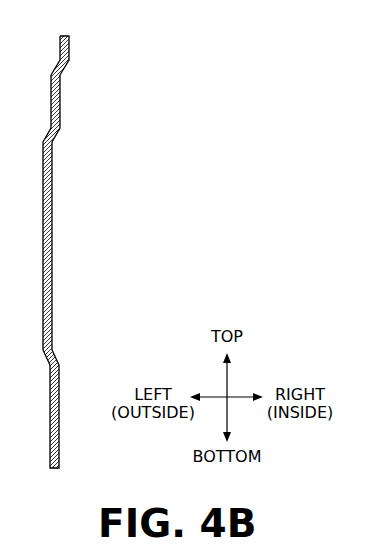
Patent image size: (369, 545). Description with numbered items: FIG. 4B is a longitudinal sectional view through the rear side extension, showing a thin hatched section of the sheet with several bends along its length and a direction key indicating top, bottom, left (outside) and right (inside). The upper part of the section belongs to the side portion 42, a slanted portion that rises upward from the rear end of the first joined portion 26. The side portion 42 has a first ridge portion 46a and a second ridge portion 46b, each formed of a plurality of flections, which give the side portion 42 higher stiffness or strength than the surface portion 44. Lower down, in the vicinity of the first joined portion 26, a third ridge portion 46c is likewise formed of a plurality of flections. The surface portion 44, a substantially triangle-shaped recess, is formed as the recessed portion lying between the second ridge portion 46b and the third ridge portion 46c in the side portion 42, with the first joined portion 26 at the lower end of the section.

The first joined portion 26 is at (60, 444).
The side portion 42 is at (94, 94).
The surface portion 44 is at (53, 216).
The first ridge portion 46a is at (65, 70).
The second ridge portion 46b is at (113, 57).
The third ridge portion 46c is at (52, 348).